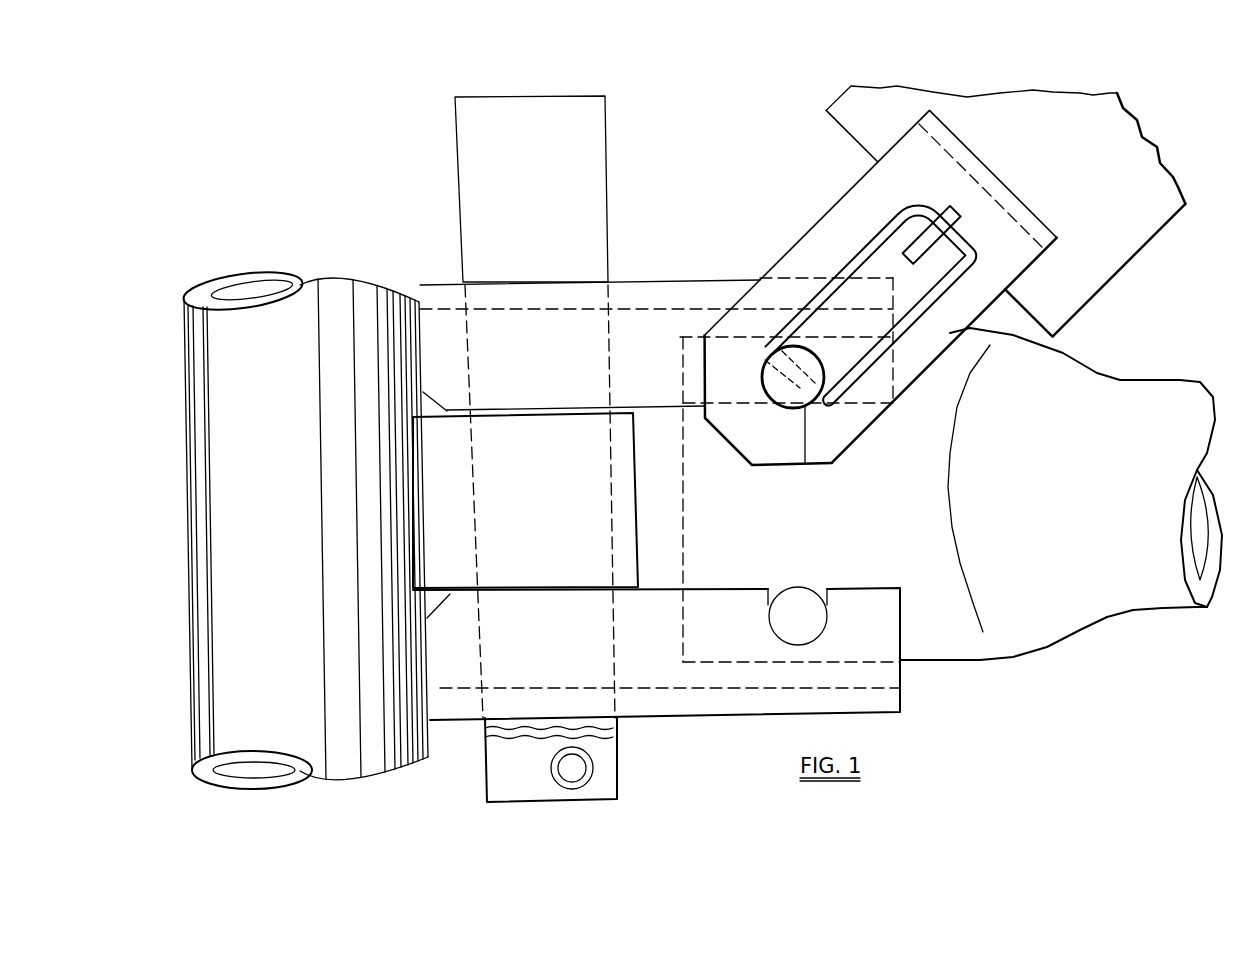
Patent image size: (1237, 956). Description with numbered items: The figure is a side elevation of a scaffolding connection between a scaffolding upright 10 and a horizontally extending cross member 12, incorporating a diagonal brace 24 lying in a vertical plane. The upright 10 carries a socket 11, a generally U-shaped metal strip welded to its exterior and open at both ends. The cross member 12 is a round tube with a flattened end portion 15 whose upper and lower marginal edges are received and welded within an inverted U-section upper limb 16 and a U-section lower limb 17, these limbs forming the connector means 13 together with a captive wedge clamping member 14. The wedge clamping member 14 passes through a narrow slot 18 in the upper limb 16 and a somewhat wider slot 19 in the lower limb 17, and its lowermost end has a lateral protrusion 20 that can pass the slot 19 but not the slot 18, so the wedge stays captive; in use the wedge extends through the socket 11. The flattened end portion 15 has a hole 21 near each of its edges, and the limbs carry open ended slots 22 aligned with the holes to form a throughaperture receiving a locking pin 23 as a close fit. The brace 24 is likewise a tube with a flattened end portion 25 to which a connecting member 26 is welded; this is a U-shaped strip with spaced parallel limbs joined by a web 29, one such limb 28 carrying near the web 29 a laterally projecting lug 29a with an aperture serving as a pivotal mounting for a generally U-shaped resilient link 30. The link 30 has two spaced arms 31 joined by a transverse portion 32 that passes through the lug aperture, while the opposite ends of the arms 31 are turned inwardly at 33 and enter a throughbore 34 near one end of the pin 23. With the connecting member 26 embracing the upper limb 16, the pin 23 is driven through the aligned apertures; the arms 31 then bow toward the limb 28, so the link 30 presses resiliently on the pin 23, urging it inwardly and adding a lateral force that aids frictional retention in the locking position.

The scaffolding upright 10 is at (176, 578).
The socket 11 is at (638, 546).
The cross member 12 is at (1131, 363).
The connector means 13 is at (678, 274).
The wedge clamping member 14 is at (608, 158).
The flattened end portion 15 is at (925, 489).
The upper limb 16 is at (734, 278).
The lower limb 17 is at (902, 695).
The narrow slot 18 is at (620, 300).
The wider slot 19 is at (640, 704).
The lateral protrusion 20 is at (593, 768).
The hole 21 is at (806, 589).
The open ended slot 22 is at (769, 590).
The locking pin 23 is at (788, 407).
The diagonal brace 24 is at (1194, 229).
The flattened end portion of brace 25 is at (1105, 270).
The connecting member 26 is at (877, 162).
The limb of connecting member 28 is at (846, 205).
The web 29 is at (1043, 217).
The lug 29a is at (960, 200).
The resilient link 30 is at (898, 196).
The arms of link 31 is at (848, 262).
The transverse portion 32 is at (963, 236).
The inturned ends 33 is at (763, 354).
The throughbore 34 is at (770, 387).